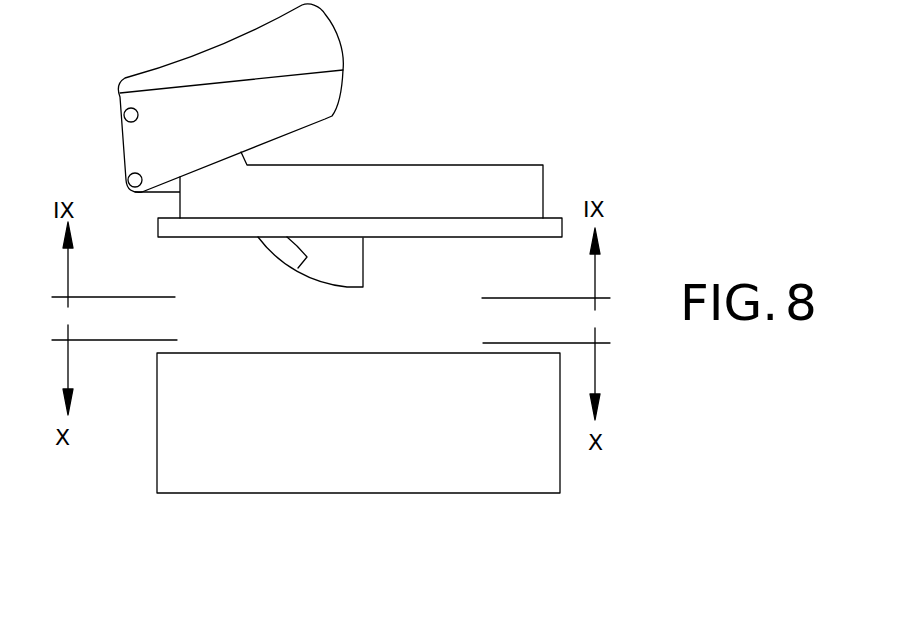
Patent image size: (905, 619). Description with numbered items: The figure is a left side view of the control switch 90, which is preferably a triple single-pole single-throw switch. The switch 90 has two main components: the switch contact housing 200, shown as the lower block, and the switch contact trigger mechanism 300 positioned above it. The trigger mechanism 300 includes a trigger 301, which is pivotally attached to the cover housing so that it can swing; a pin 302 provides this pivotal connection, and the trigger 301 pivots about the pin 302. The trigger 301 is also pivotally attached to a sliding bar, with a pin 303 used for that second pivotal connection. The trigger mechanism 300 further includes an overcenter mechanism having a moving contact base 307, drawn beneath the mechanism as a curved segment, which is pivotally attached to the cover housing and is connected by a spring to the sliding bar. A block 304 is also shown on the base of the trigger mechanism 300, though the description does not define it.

The control switch 90 is at (545, 115).
The switch contact housing 200 is at (392, 470).
The switch contact trigger mechanism 300 is at (400, 108).
The trigger 301 is at (255, 53).
The pin 302 is at (124, 116).
The pin 303 is at (128, 181).
The block 304 is at (413, 183).
The moving contact base 307 is at (343, 253).